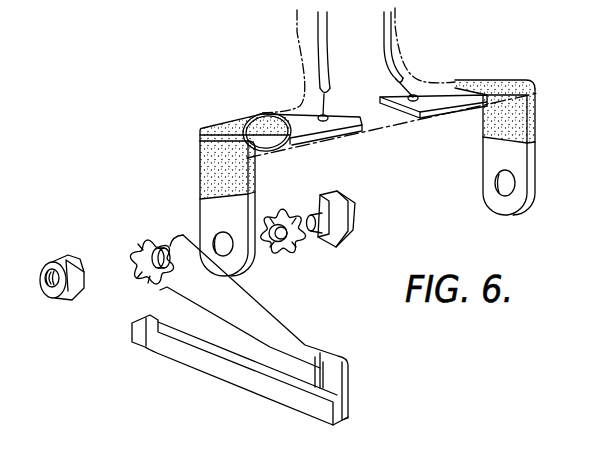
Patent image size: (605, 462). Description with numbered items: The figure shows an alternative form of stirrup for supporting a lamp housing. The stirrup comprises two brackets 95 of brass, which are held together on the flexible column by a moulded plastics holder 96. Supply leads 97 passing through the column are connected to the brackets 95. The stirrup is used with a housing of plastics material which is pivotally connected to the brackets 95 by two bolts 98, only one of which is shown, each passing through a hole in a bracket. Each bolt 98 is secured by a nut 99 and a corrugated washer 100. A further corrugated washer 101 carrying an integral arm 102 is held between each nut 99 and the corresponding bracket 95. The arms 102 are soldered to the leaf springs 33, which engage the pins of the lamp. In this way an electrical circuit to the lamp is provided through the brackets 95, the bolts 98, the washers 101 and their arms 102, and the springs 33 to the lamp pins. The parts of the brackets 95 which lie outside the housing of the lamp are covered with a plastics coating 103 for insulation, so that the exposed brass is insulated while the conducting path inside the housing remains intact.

The leaf spring 33 is at (188, 362).
The bracket 95 is at (205, 210).
The moulded plastics holder 96 is at (437, 77).
The supply lead 97 is at (388, 72).
The bolt 98 is at (348, 213).
The nut 99 is at (72, 262).
The corrugated washer 100 is at (285, 212).
The corrugated washer 101 is at (150, 233).
The arm 102 is at (257, 330).
The plastics coating 103 is at (225, 130).